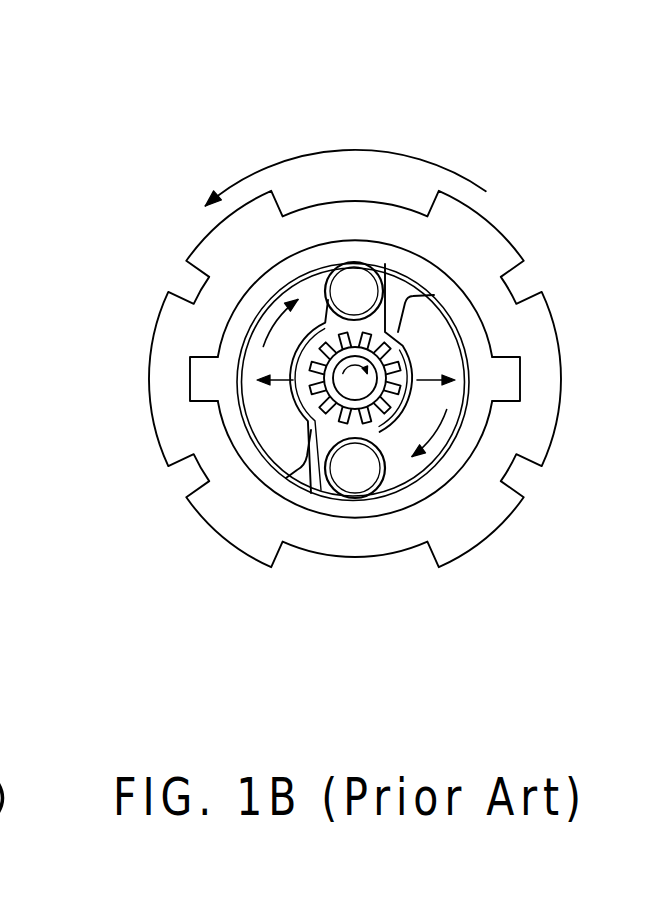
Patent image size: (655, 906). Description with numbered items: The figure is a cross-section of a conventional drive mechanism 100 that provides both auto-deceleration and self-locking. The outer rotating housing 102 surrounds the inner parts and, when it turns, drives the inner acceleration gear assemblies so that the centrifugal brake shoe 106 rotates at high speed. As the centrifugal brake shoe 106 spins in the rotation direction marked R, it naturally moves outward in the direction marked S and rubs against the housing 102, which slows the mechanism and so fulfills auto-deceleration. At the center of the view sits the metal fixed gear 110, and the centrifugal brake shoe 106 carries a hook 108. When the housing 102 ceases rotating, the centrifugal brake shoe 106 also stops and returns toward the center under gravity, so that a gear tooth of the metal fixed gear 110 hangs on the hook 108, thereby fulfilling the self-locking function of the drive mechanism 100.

The drive mechanism 100 is at (142, 57).
The rotating housing 102 is at (473, 530).
The centrifugal brake shoe 106 is at (430, 313).
The hook 108 is at (300, 470).
The metal fixed gear 110 is at (322, 494).